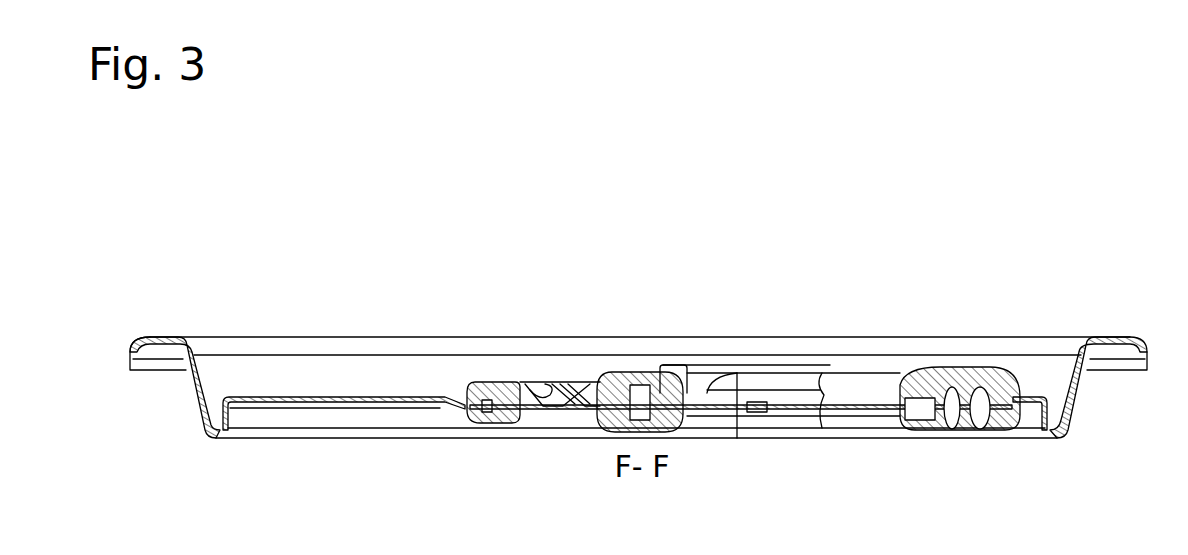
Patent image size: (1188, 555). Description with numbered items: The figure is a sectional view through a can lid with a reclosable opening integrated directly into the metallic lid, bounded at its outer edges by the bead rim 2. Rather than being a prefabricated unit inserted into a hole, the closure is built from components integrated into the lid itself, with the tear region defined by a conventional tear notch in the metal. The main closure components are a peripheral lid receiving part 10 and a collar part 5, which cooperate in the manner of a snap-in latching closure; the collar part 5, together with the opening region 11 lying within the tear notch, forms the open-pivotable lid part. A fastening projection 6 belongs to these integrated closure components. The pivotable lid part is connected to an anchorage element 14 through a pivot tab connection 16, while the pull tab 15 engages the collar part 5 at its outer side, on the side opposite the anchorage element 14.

The bead rim 2 is at (1117, 350).
The collar part 5 is at (968, 378).
The fastening projection 6 is at (678, 430).
The lid receiving part 10 is at (965, 423).
The opening region 11 is at (798, 411).
The anchorage element 14 is at (487, 415).
The pull tab 15 is at (802, 372).
The pivot tab connection 16 is at (548, 388).